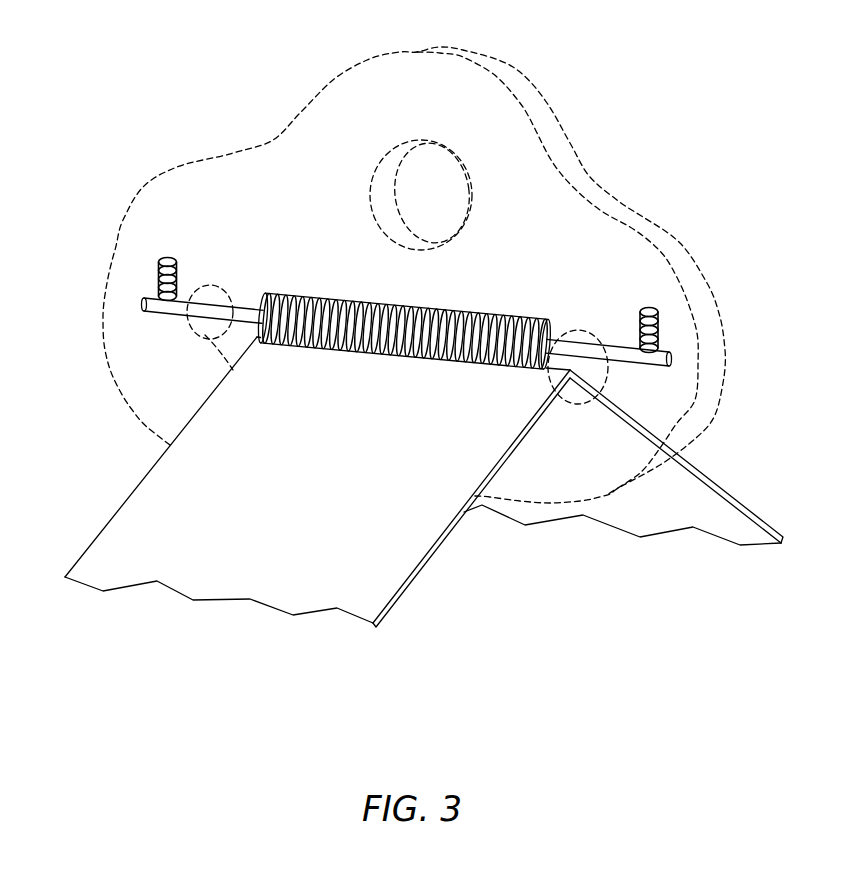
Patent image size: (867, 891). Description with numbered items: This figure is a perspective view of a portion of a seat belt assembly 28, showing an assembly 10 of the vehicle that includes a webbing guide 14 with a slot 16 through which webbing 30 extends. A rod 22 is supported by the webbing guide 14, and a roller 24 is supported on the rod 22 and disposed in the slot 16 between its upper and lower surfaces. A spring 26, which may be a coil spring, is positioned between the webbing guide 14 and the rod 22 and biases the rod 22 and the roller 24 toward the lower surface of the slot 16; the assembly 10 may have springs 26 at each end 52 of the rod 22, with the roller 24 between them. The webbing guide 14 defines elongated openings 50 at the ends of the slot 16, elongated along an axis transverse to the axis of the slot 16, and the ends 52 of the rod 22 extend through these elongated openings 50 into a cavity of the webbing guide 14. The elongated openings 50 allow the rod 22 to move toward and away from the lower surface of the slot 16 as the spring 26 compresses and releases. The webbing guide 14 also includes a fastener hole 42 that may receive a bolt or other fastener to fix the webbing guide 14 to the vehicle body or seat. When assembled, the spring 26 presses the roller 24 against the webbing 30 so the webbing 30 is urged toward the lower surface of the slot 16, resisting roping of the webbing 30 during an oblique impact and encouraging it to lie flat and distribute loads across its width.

The assembly 10 is at (712, 92).
The webbing guide 14 is at (273, 133).
The slot 16 is at (235, 338).
The rod 22 is at (588, 348).
The roller 24 is at (410, 357).
The spring 26 is at (160, 266).
The seat belt assembly 28 is at (120, 620).
The webbing 30 is at (307, 588).
The fastener hole 42 is at (392, 152).
The elongated openings 50 is at (203, 333).
The ends of the rod 52 is at (144, 306).